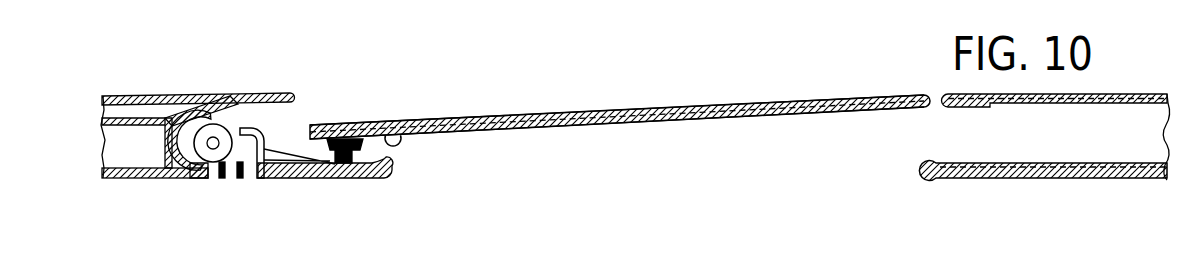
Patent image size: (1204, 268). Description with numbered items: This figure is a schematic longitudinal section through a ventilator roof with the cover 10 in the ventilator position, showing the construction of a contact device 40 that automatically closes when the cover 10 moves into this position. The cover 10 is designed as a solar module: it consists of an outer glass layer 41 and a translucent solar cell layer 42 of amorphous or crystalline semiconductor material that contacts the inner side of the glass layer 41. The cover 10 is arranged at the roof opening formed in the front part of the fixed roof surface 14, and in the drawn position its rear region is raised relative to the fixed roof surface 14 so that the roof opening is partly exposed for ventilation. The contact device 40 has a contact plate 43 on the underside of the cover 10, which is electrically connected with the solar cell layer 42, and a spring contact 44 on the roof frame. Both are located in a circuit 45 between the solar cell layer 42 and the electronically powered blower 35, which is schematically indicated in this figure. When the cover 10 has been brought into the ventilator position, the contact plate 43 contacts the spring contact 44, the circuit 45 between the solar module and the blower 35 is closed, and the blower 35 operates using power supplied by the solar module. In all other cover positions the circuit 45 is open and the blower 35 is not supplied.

The cover 10 is at (510, 118).
The fixed roof surface 14 is at (148, 95).
The blower 35 is at (208, 128).
The contact device 40 is at (396, 157).
The glass layer 41 is at (648, 108).
The solar cell layer 42 is at (688, 118).
The contact plate 43 is at (365, 125).
The spring contact 44 is at (348, 180).
The circuit 45 is at (290, 180).